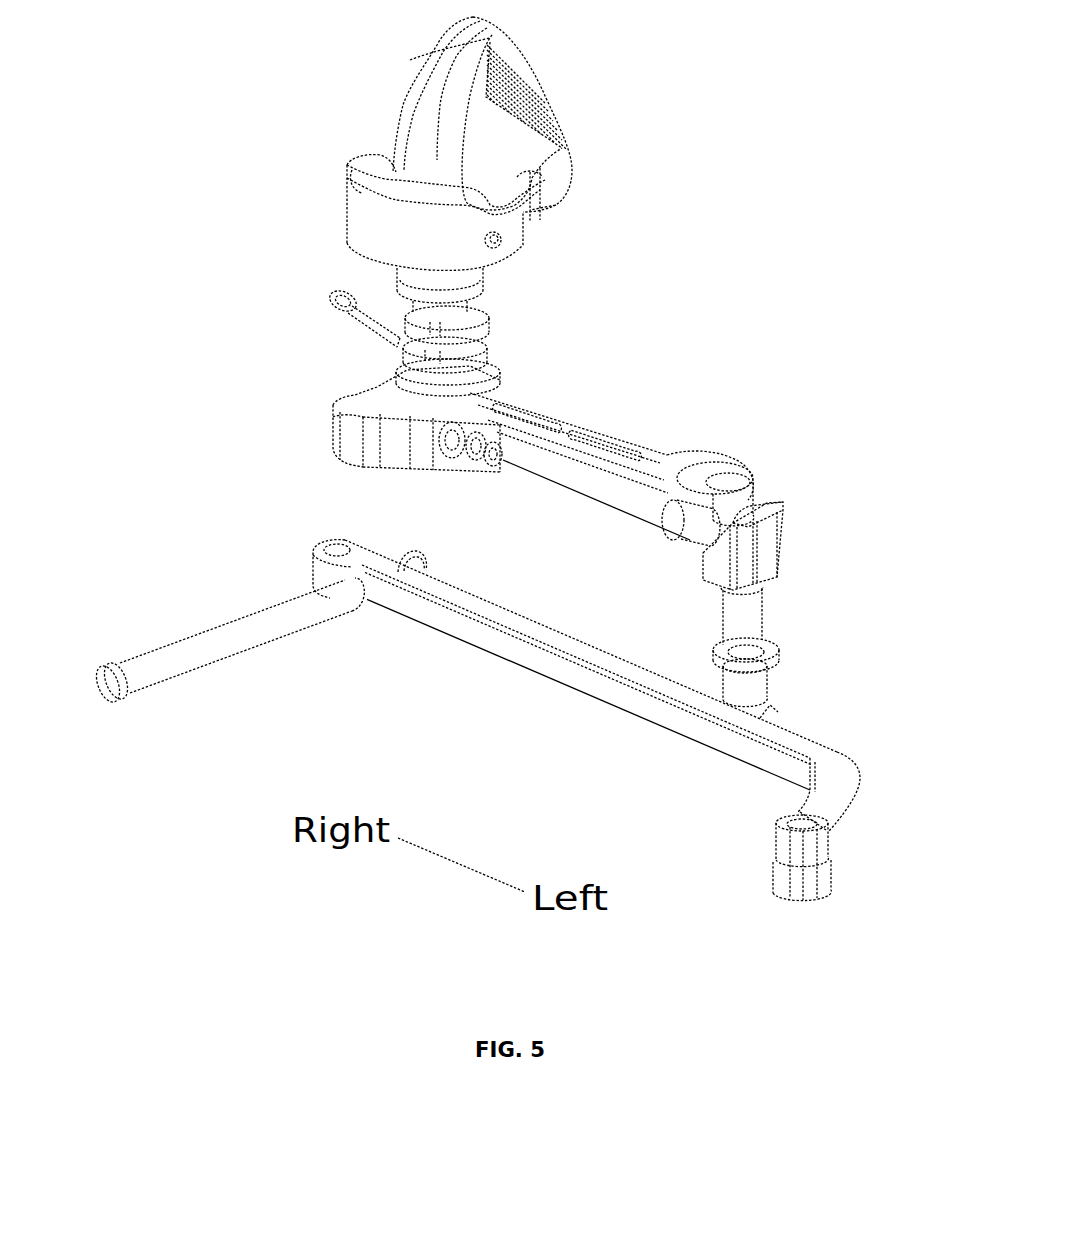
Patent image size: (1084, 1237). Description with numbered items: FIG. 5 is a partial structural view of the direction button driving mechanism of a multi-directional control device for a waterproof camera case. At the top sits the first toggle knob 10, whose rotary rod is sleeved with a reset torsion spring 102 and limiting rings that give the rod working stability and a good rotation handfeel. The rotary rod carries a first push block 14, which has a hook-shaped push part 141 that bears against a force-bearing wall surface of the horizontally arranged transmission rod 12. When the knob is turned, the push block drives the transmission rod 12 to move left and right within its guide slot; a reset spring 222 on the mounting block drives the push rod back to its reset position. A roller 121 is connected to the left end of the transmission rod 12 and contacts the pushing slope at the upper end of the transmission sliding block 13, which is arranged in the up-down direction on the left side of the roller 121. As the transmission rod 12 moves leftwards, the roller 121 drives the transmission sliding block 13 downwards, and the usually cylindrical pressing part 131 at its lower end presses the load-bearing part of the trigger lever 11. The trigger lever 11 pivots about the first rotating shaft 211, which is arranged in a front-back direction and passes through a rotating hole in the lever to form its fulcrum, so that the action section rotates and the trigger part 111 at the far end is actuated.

The first toggle knob 10 is at (512, 161).
The reset torsion spring 102 is at (338, 296).
The first push block 14 is at (392, 388).
The hook-shaped push part 141 is at (350, 407).
The reset spring 222 is at (490, 450).
The transmission rod 12 is at (573, 463).
The roller 121 is at (713, 480).
The transmission sliding block 13 is at (747, 613).
The pressing part 131 is at (760, 683).
The trigger lever 11 is at (570, 670).
The first rotating shaft 211 is at (243, 645).
The trigger part 111 is at (800, 877).